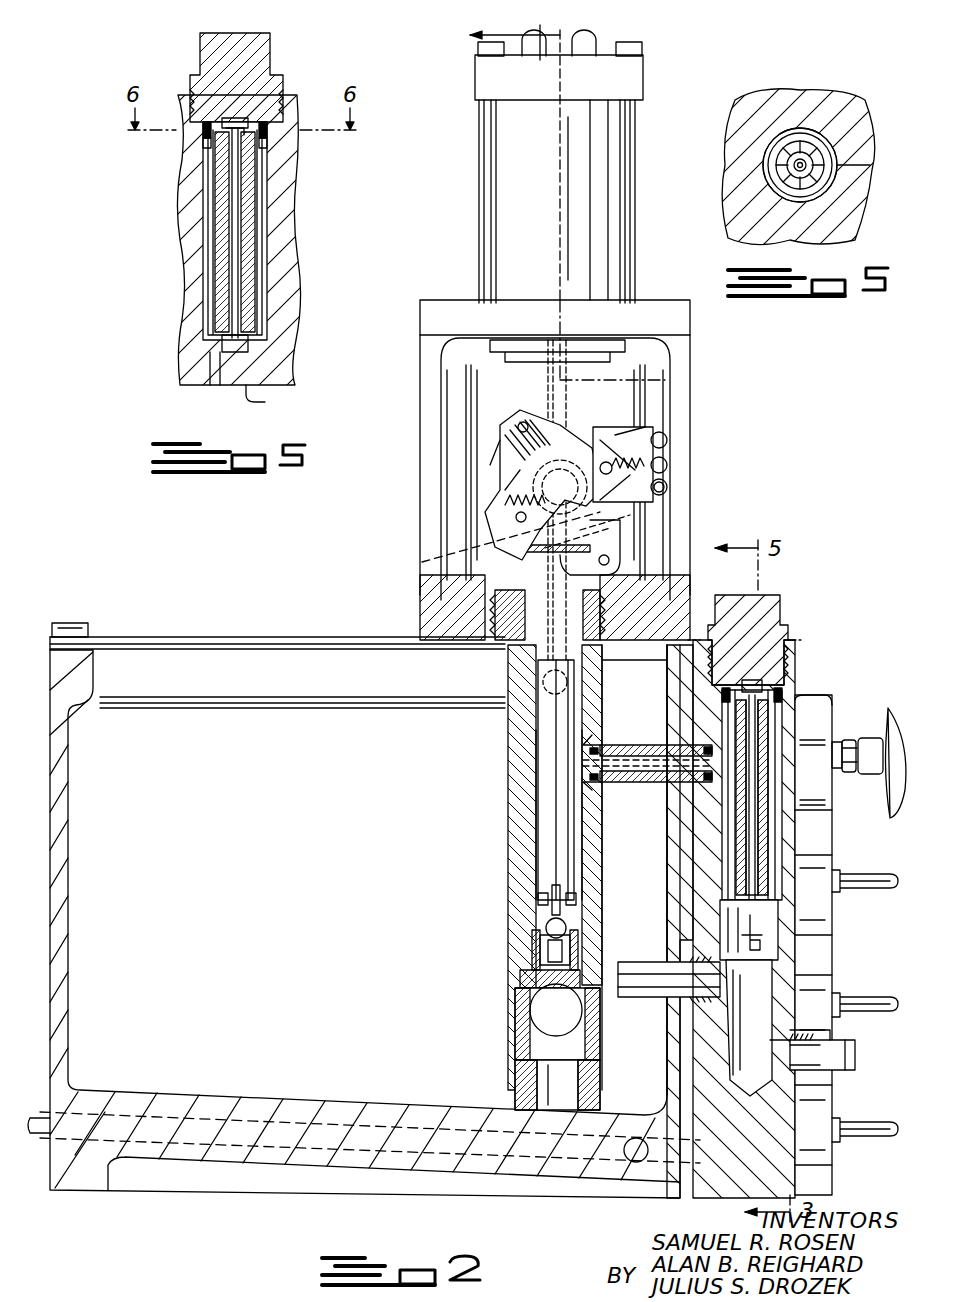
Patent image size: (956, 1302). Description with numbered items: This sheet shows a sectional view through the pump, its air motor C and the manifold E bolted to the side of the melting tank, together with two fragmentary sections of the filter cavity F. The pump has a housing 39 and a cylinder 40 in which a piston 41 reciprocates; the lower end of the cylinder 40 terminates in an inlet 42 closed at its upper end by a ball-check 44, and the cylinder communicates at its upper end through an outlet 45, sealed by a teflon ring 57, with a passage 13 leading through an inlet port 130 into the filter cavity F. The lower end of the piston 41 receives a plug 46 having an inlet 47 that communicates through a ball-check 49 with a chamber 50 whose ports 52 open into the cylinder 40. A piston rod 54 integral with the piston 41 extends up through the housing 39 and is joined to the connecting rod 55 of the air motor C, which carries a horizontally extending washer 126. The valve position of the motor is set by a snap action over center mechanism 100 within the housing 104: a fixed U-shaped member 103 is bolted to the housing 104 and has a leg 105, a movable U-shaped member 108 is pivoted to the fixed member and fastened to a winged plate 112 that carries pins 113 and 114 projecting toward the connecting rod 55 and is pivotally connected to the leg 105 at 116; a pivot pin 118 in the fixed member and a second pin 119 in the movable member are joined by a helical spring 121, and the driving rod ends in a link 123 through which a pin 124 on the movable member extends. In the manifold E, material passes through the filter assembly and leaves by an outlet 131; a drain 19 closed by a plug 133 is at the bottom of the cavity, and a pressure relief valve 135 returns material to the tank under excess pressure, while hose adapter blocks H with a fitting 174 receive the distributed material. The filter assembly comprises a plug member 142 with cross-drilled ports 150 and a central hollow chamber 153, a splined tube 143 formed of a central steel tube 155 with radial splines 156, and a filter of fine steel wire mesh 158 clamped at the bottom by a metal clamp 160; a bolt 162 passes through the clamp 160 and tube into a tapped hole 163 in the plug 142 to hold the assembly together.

In FIG. 2, the air motor C is at (480, 215).
In FIG. 2, the housing 104 is at (660, 392).
In FIG. 2, the snap action over center mechanism 100 is at (502, 445).
In FIG. 2, the pin 113 is at (524, 420).
In FIG. 2, the winged plate 112 is at (498, 470).
In FIG. 2, the link 123 is at (560, 408).
In FIG. 2, the pin 124 is at (560, 484).
In FIG. 2, the leg 105 is at (640, 420).
In FIG. 2, the pivot connection 116 is at (612, 466).
In FIG. 2, the fixed U-shaped member 103 is at (670, 455).
In FIG. 2, the pivot pin 118 is at (667, 478).
In FIG. 2, the second pin 119 is at (510, 515).
In FIG. 2, the movable U-shaped member 108 is at (516, 518).
In FIG. 2, the helical spring 121 is at (445, 562).
In FIG. 2, the washer 126 is at (590, 540).
In FIG. 2, the pin 114 is at (610, 562).
In FIG. 2, the connecting rod 55 is at (545, 552).
In FIG. 2, the pump housing 39 is at (518, 742).
In FIG. 2, the piston rod 54 is at (548, 775).
In FIG. 2, the cylinder 40 is at (540, 810).
In FIG. 2, the outlet 45 is at (598, 770).
In FIG. 2, the inlet port 130 is at (690, 790).
In FIG. 2, the passage 13 is at (632, 760).
In FIG. 2, the teflon ring 57 is at (598, 748).
In FIG. 2, the ports 52 is at (540, 900).
In FIG. 2, the chamber 50 is at (540, 912).
In FIG. 2, the piston 41 is at (548, 925).
In FIG. 2, the ball-check 49 is at (545, 945).
In FIG. 2, the plug 46 is at (538, 962).
In FIG. 2, the inlet 47 is at (530, 985).
In FIG. 2, the ball-check 44 is at (550, 1033).
In FIG. 2, the inlet 42 is at (575, 1098).
In FIG. 2, the pressure relief valve 135 is at (660, 997).
In FIG. 2, the tapped hole 163 is at (780, 648).
In FIG. 5, the ports 150 is at (205, 150).
In FIG. 6, the ports 150 is at (800, 130).
In FIG. 2, the ports 150 is at (725, 695).
In FIG. 5, the central hollow chamber 153 is at (212, 172).
In FIG. 6, the central hollow chamber 153 is at (798, 150).
In FIG. 2, the central hollow chamber 153 is at (765, 692).
In FIG. 5, the splines 156 is at (222, 228).
In FIG. 6, the splines 156 is at (785, 178).
In FIG. 2, the splines 156 is at (740, 828).
In FIG. 5, the fine steel wire mesh 158 is at (262, 222).
In FIG. 2, the fine steel wire mesh 158 is at (750, 860).
In FIG. 5, the central steel tube 155 is at (250, 312).
In FIG. 6, the central steel tube 155 is at (790, 160).
In FIG. 2, the central steel tube 155 is at (732, 888).
In FIG. 5, the filter cavity F is at (210, 278).
In FIG. 2, the filter cavity F is at (722, 925).
In FIG. 2, the hose adapter blocks H is at (818, 728).
In FIG. 2, the fitting 174 is at (858, 738).
In FIG. 2, the plug 133 is at (850, 1055).
In FIG. 2, the drain 19 is at (835, 1075).
In FIG. 5, the plug member 142 is at (260, 60).
In FIG. 5, the outlet 131 is at (275, 118).
In FIG. 6, the outlet 131 is at (848, 150).
In FIG. 5, the splined tube 143 is at (258, 205).
In FIG. 5, the metal clamp 160 is at (215, 340).
In FIG. 5, the bolt 162 is at (262, 352).
In FIG. 6, the manifold E is at (845, 200).